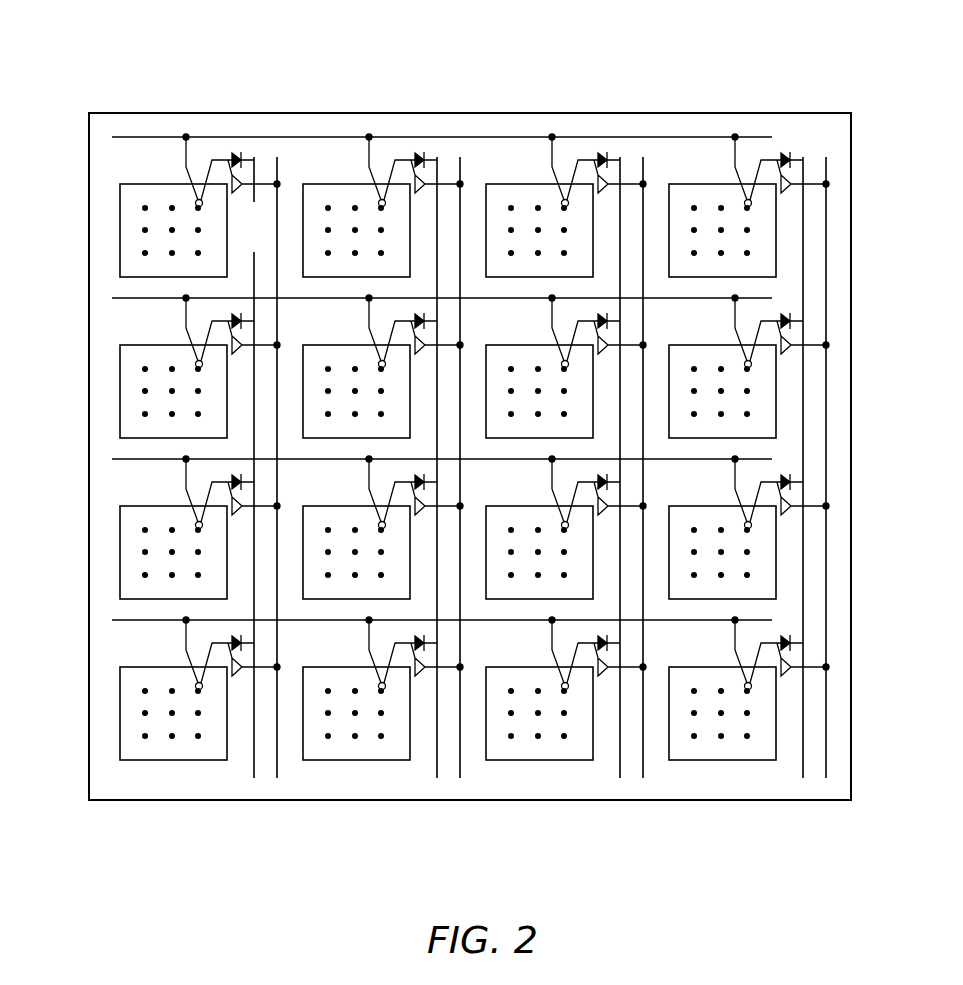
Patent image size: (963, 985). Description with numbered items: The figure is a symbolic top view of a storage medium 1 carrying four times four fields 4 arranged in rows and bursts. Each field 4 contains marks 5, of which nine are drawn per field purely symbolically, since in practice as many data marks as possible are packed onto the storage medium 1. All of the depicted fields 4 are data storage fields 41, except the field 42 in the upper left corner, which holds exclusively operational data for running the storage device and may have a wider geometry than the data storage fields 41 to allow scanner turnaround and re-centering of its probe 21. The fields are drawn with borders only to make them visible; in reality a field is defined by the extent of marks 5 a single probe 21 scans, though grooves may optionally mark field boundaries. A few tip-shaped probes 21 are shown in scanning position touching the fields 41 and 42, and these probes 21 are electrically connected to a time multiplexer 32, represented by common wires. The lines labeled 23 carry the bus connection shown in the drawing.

The storage medium 1 is at (568, 113).
The field 4 is at (657, 179).
The mark 5 is at (201, 230).
The probe 21 is at (200, 164).
The power supply line 23 is at (493, 137).
The time multiplexer 32 is at (826, 167).
The data storage field 41 is at (120, 407).
The operational data field 42 is at (120, 237).